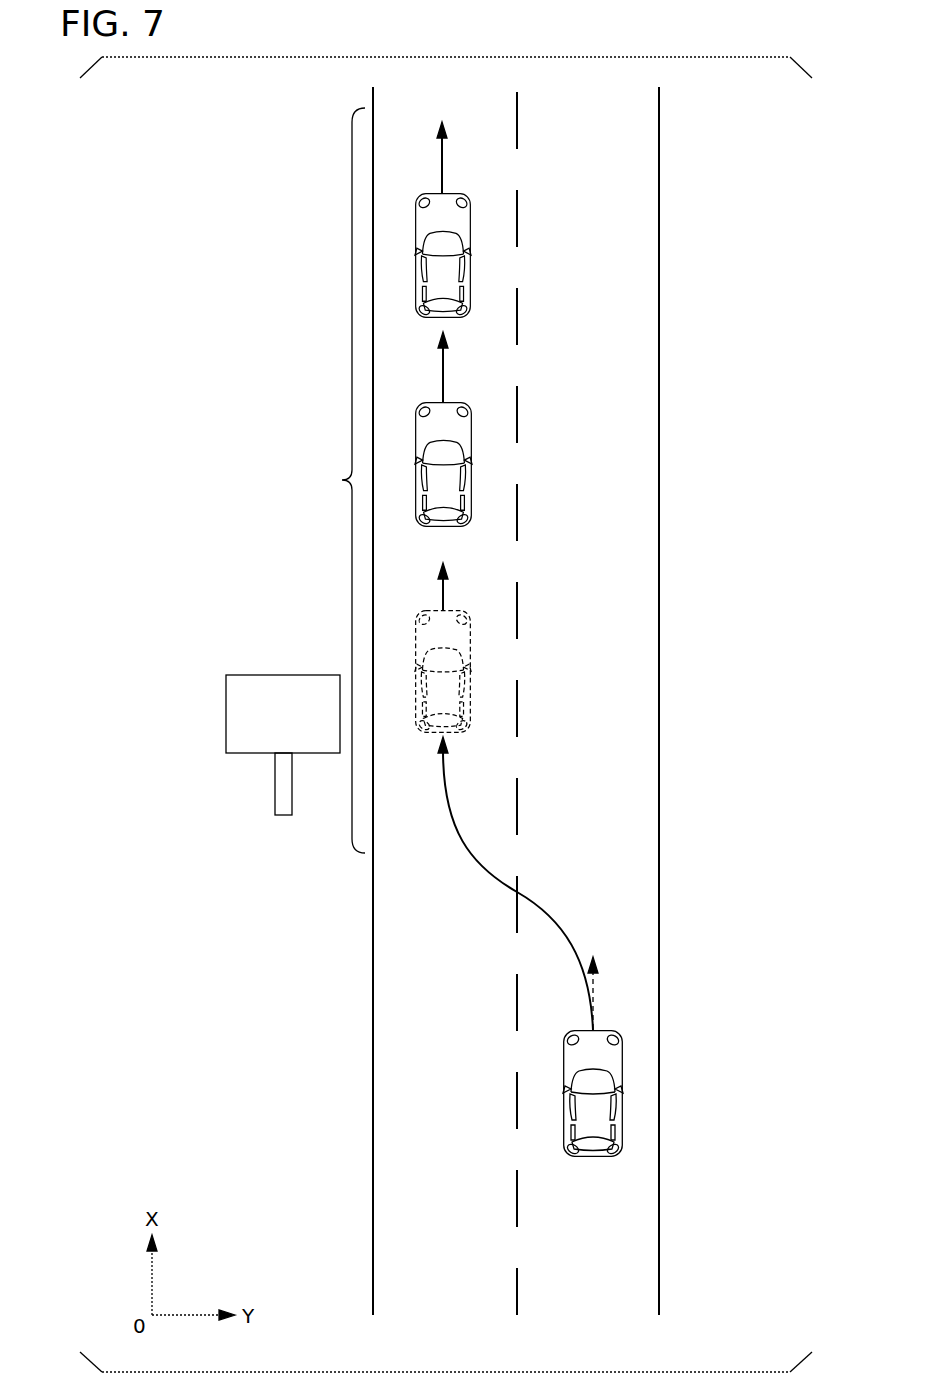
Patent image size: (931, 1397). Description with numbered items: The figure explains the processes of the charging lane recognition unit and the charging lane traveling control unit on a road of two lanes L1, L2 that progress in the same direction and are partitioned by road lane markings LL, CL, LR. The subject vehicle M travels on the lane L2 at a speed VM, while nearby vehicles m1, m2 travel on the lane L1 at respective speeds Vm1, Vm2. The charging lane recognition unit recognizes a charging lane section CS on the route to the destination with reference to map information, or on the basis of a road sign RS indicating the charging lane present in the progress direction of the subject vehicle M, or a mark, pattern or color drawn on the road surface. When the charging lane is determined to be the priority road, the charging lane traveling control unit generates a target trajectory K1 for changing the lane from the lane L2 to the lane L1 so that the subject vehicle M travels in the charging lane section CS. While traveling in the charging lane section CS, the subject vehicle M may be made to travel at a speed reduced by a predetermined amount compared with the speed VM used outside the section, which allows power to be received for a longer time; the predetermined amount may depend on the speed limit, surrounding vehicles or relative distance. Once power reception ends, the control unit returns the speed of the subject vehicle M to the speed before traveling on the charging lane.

The speed of nearby vehicle m1 Vm1 is at (443, 165).
The nearby vehicle m1 is at (470, 262).
The speed of nearby vehicle m2 Vm2 is at (443, 373).
The nearby vehicle m2 is at (472, 468).
The charging lane section CS is at (332, 480).
The road sign RS is at (283, 674).
The target trajectory K1 is at (533, 907).
The speed of subject vehicle VM is at (595, 990).
The subject vehicle M is at (623, 1098).
The road lane marking LL is at (373, 1195).
The road lane marking CL is at (517, 1193).
The road lane marking LR is at (659, 1193).
The lane L1 is at (462, 1288).
The lane L2 is at (606, 1288).